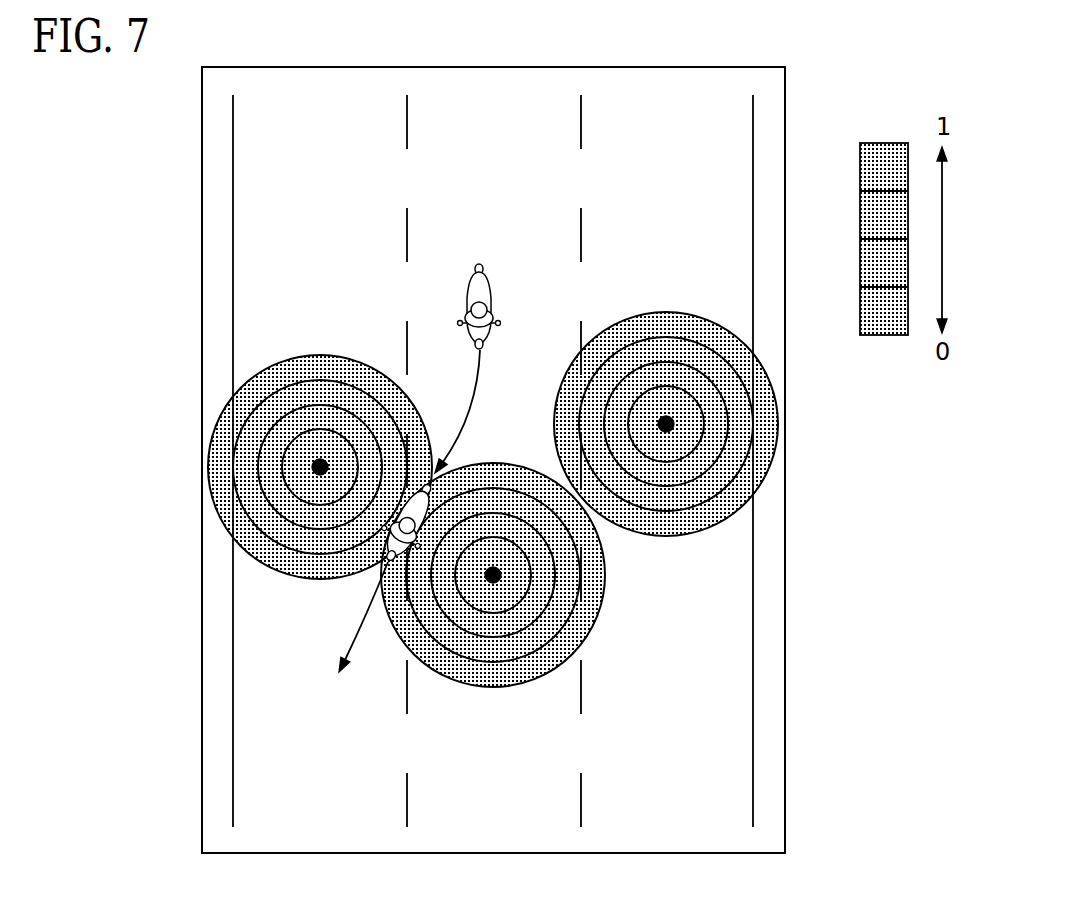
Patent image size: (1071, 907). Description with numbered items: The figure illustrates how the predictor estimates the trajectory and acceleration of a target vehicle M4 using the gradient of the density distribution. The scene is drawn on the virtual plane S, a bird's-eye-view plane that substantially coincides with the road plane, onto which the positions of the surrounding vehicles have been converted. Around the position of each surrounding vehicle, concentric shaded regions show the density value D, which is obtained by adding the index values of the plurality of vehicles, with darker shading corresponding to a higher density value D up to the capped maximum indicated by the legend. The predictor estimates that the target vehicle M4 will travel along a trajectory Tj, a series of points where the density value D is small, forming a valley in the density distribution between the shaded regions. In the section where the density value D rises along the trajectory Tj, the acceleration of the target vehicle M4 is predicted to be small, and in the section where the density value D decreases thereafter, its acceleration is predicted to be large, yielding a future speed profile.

The virtual plane S is at (785, 88).
The target vehicle M4 is at (487, 275).
The trajectory Tj is at (476, 404).
The density value D is at (735, 458).